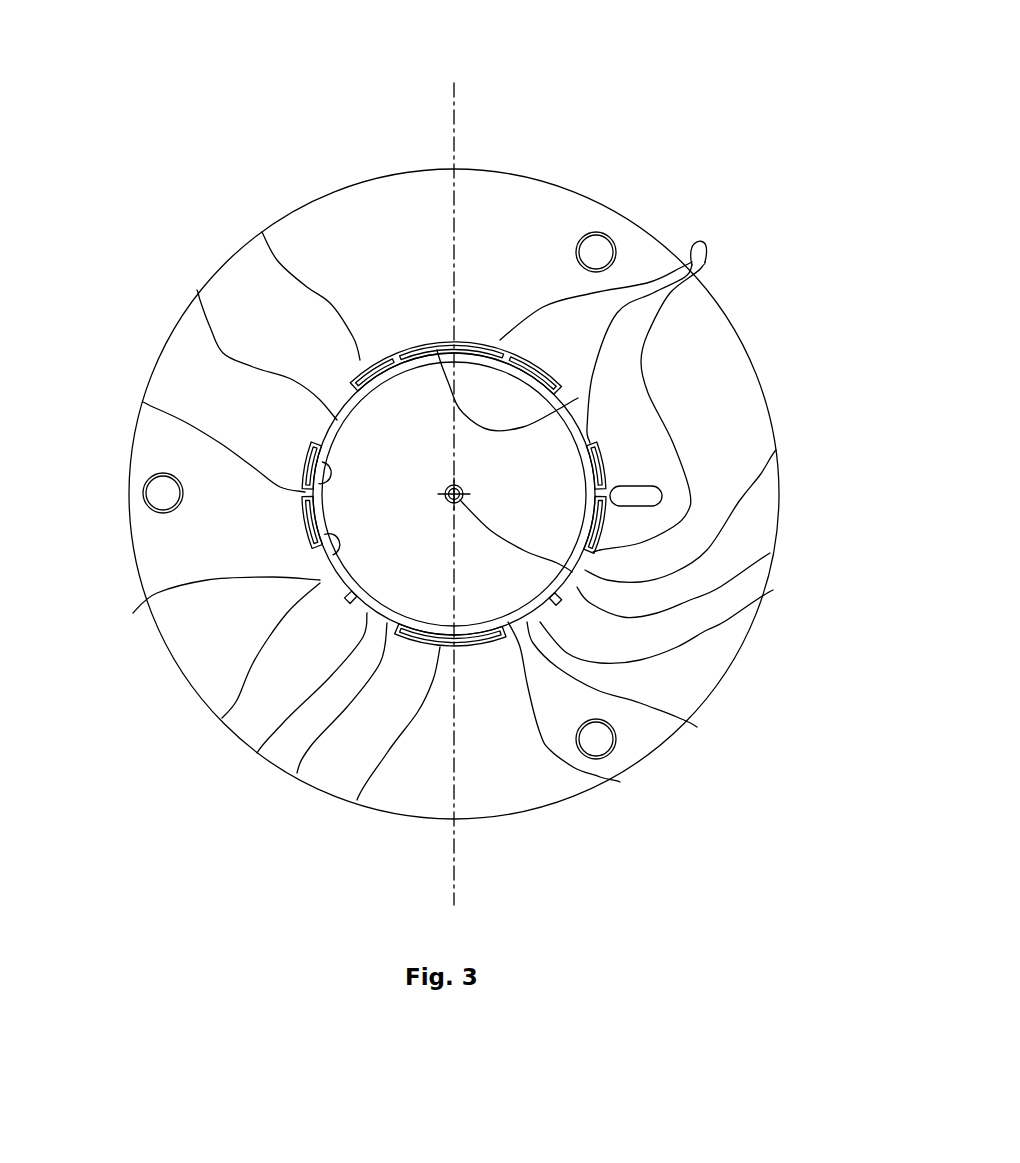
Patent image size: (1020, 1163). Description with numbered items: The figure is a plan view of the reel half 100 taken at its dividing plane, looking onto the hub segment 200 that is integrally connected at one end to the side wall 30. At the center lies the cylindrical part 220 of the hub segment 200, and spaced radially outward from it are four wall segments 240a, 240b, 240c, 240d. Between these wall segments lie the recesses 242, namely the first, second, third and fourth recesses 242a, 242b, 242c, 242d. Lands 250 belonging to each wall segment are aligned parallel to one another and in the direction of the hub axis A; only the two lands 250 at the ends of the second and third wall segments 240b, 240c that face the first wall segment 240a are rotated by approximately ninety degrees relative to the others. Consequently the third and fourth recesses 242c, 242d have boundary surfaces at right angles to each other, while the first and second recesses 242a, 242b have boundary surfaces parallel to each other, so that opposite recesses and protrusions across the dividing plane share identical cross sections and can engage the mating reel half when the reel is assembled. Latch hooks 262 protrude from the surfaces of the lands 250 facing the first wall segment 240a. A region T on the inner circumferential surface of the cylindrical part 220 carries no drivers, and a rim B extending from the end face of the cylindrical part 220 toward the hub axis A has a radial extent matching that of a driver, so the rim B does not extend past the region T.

The reel half 100 is at (737, 122).
The hub segment 200 is at (177, 210).
The side wall 30 is at (550, 213).
The cylindrical part 220 is at (143, 402).
The recesses 242 is at (178, 115).
The first recess 242a is at (697, 727).
The second recess 242b is at (297, 773).
The third recess 242c is at (437, 350).
The fourth recess 242d is at (197, 290).
The first wall segment 240a is at (357, 800).
The second wall segment 240b is at (770, 553).
The third wall segment 240c is at (222, 718).
The fourth wall segment 240d is at (262, 232).
The lands 250 is at (655, 385).
The latch hooks 262 is at (257, 753).
The region T is at (133, 613).
The hub axis A is at (466, 135).
The rim B is at (620, 782).